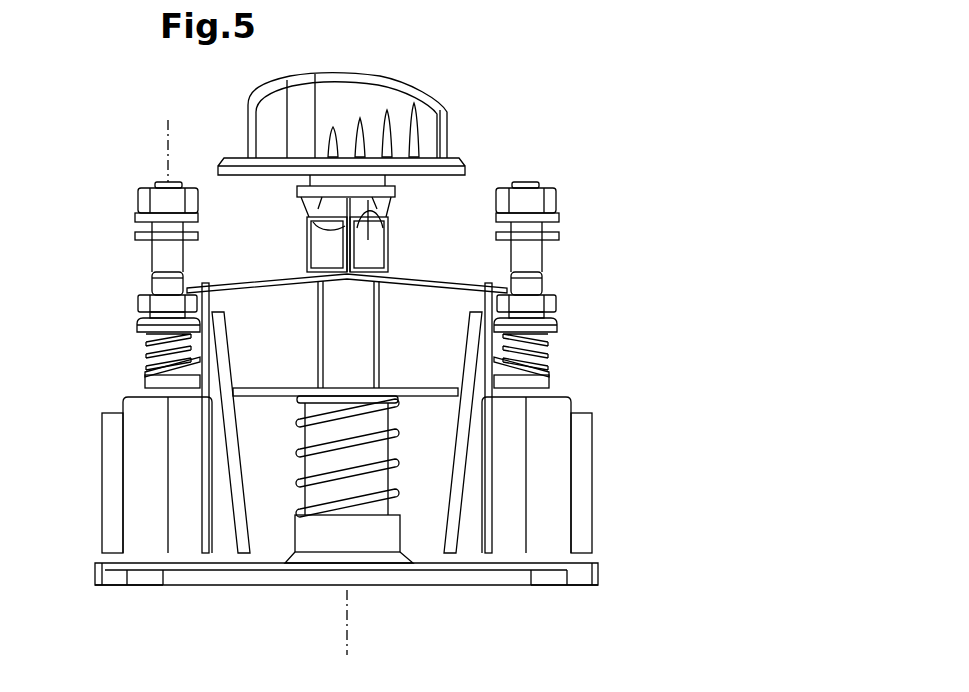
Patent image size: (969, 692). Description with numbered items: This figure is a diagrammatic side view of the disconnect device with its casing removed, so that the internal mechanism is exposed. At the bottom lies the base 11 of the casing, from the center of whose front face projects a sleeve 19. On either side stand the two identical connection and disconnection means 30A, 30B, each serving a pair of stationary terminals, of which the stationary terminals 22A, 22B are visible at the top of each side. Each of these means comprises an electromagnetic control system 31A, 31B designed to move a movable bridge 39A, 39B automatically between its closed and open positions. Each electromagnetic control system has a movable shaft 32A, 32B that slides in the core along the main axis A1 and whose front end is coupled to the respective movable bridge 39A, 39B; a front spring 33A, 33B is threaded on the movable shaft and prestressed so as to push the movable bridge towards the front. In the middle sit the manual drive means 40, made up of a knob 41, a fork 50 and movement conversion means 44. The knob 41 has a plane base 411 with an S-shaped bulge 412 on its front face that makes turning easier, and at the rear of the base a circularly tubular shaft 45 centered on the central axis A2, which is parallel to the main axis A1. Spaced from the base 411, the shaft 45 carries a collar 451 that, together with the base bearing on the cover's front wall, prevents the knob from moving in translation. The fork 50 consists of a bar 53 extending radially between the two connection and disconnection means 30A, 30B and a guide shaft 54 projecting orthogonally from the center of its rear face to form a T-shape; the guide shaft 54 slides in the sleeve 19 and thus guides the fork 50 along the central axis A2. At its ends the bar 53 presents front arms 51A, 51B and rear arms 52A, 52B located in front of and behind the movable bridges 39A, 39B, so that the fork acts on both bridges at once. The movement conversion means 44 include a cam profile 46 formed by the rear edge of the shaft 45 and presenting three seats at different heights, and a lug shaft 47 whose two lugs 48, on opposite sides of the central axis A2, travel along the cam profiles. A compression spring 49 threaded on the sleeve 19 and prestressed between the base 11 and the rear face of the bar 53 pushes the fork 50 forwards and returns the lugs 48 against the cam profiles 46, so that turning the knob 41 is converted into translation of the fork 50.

The base 11 is at (376, 617).
The sleeve 19 is at (317, 493).
The stationary terminal 22A is at (142, 200).
The stationary terminal 22B is at (550, 202).
The connection and disconnection means 30A is at (140, 595).
The connection and disconnection means 30B is at (532, 600).
The electromagnetic control system 31A is at (102, 462).
The electromagnetic control system 31B is at (594, 453).
The movable shaft 32A is at (145, 366).
The movable shaft 32B is at (555, 355).
The second compression spring 33A is at (145, 348).
The second compression spring 33B is at (560, 362).
The movable bridge 39A is at (136, 326).
The movable bridge 39B is at (558, 325).
The manual drive means 40 is at (370, 74).
The knob 41 is at (396, 92).
The plane base 411 is at (457, 160).
The bulge 412 is at (444, 118).
The movement conversion means 44 is at (456, 204).
The shaft 45 is at (397, 185).
The collar 451 is at (347, 226).
The cam profile 46 is at (390, 247).
The lug shaft 47 is at (392, 260).
The lugs 48 is at (423, 204).
The compression spring 49 is at (392, 274).
The fork 50 is at (224, 284).
The front arm 51A is at (150, 296).
The front arm 51B is at (556, 290).
The rear arm 52A is at (122, 400).
The rear arm 52B is at (550, 420).
The bar 53 is at (262, 380).
The guide shaft 54 is at (303, 388).
The main axis A1 is at (133, 137).
The central axis A2 is at (326, 630).